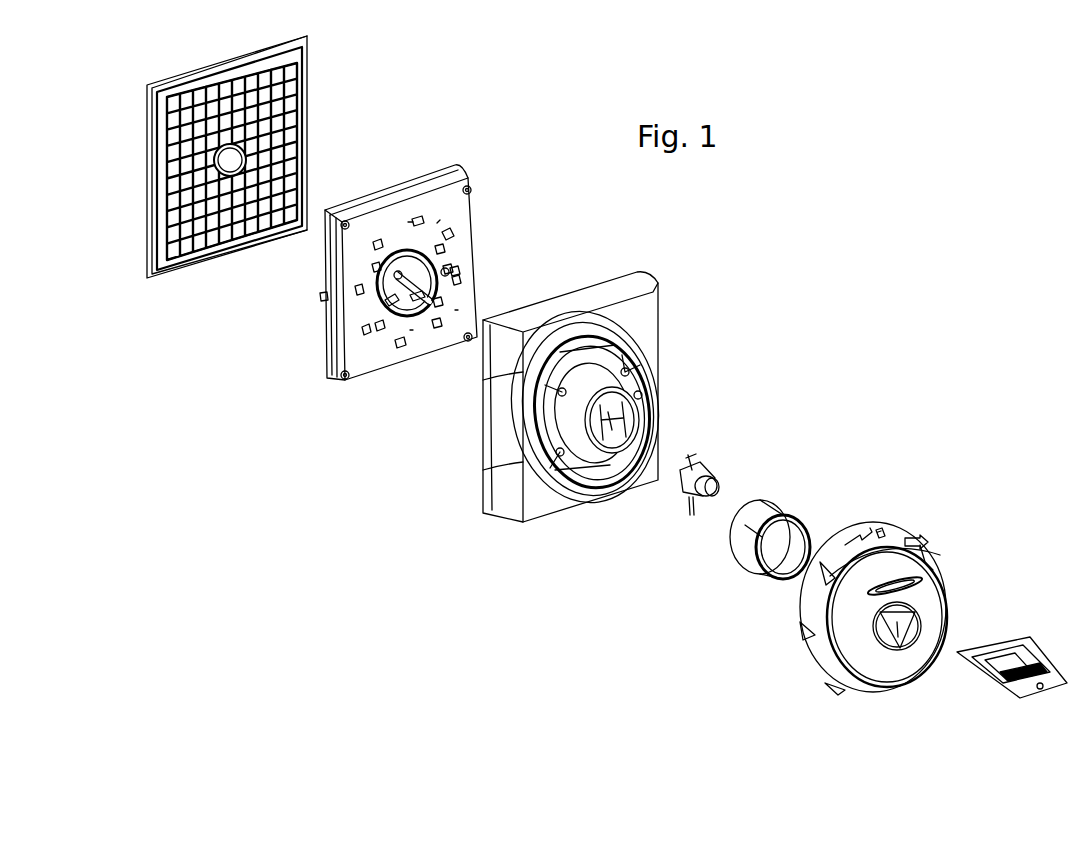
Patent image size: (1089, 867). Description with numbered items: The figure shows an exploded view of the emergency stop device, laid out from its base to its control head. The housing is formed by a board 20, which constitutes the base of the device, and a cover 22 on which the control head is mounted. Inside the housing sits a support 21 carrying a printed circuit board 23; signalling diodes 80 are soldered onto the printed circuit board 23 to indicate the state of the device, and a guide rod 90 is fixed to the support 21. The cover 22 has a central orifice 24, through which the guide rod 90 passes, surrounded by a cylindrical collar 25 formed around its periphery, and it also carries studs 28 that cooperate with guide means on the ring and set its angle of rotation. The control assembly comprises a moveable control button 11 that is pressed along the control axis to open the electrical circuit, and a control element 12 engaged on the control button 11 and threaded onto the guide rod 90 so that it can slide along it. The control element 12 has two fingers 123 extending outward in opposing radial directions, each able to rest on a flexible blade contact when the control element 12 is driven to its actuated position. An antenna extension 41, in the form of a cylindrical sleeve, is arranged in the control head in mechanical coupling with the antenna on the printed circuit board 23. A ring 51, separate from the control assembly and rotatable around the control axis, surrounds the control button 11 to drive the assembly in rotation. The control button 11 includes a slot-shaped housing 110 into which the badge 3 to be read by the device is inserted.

The board 20 is at (192, 267).
The support 21 is at (428, 320).
The printed circuit board 23 is at (463, 222).
The signalling diodes 80 is at (467, 270).
The guide rod 90 is at (420, 307).
The cover 22 is at (607, 394).
The studs 28 is at (553, 467).
The cylindrical collar 25 is at (640, 398).
The central orifice 24 is at (633, 436).
The control element 12 is at (688, 482).
The fingers 123 is at (693, 508).
The antenna extension 41 is at (783, 500).
The control button 11 is at (871, 578).
The ring 51 is at (890, 528).
The housing 110 is at (927, 560).
The badge 3 is at (1003, 637).